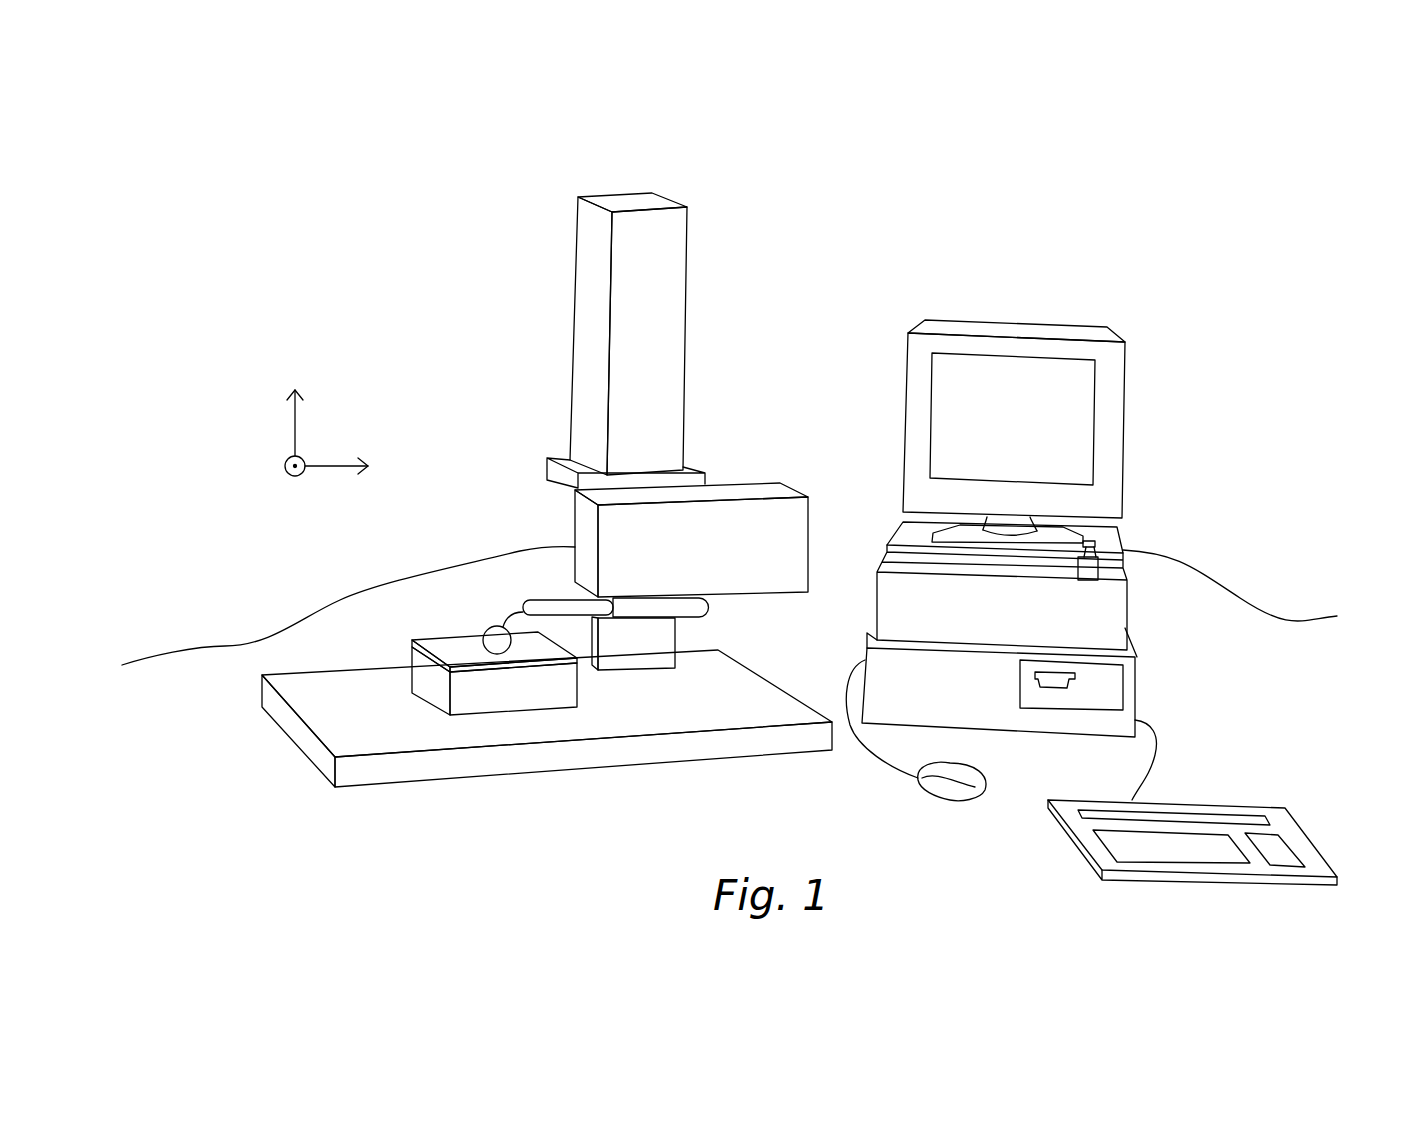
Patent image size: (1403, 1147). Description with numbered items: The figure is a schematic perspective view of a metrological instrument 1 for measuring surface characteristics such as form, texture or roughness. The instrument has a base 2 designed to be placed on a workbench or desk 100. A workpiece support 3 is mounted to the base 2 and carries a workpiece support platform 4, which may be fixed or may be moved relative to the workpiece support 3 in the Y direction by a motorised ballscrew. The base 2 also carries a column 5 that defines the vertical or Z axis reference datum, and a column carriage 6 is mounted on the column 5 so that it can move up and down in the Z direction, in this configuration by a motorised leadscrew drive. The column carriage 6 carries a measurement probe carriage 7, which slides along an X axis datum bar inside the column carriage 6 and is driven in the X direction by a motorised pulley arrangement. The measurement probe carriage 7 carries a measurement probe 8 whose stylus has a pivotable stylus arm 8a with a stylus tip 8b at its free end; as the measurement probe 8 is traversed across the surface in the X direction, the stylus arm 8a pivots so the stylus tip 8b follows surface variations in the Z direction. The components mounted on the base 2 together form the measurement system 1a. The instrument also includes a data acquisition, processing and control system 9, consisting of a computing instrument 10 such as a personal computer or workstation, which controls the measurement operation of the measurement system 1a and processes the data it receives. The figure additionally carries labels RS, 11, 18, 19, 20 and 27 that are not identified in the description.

The metrological instrument 1 is at (858, 210).
The measurement system 1a is at (460, 447).
The base 2 is at (490, 758).
The workpiece support 3 is at (435, 680).
The workpiece support platform 4 is at (518, 657).
The column 5 is at (662, 248).
The column carriage 6 is at (757, 505).
The measurement probe carriage 7 is at (652, 613).
The measurement probe 8 is at (540, 610).
The stylus arm 8a is at (500, 617).
The stylus tip 8b is at (492, 626).
The reference sphere RS is at (493, 640).
The data acquisition, processing and control system 9 is at (988, 263).
The computing instrument 10 is at (1136, 327).
The computer body 11 is at (1103, 612).
The mouse 18 is at (950, 798).
The display 19 is at (1110, 427).
The keyboard 20 is at (1278, 828).
The joystick 27 is at (1093, 545).
The workbench or desk 100 is at (172, 677).